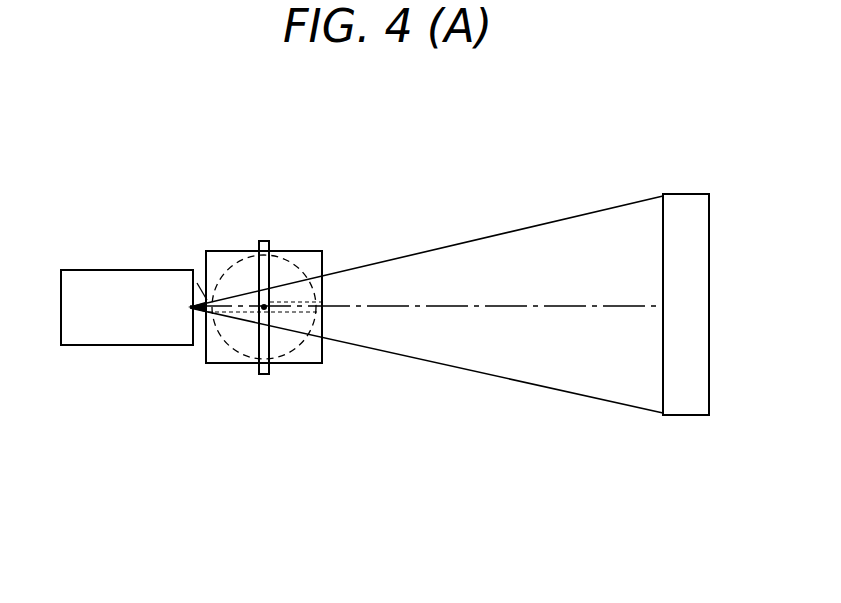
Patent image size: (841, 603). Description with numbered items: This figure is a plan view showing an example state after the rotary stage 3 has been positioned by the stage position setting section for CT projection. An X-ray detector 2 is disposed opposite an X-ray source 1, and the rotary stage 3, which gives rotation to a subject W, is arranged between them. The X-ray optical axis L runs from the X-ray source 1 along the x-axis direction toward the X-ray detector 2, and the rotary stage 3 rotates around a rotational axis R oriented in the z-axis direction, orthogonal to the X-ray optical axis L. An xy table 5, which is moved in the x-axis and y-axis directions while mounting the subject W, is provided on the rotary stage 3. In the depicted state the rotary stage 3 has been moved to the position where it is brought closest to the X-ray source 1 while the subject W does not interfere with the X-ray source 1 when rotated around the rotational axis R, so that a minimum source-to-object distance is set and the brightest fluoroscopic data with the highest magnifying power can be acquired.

The X-ray source 1 is at (123, 335).
The X-ray detector 2 is at (680, 194).
The rotary stage 3 is at (302, 342).
The xy table 5 is at (323, 268).
The subject W is at (266, 240).
The rotational axis R is at (263, 318).
The X-ray optical axis L is at (503, 307).